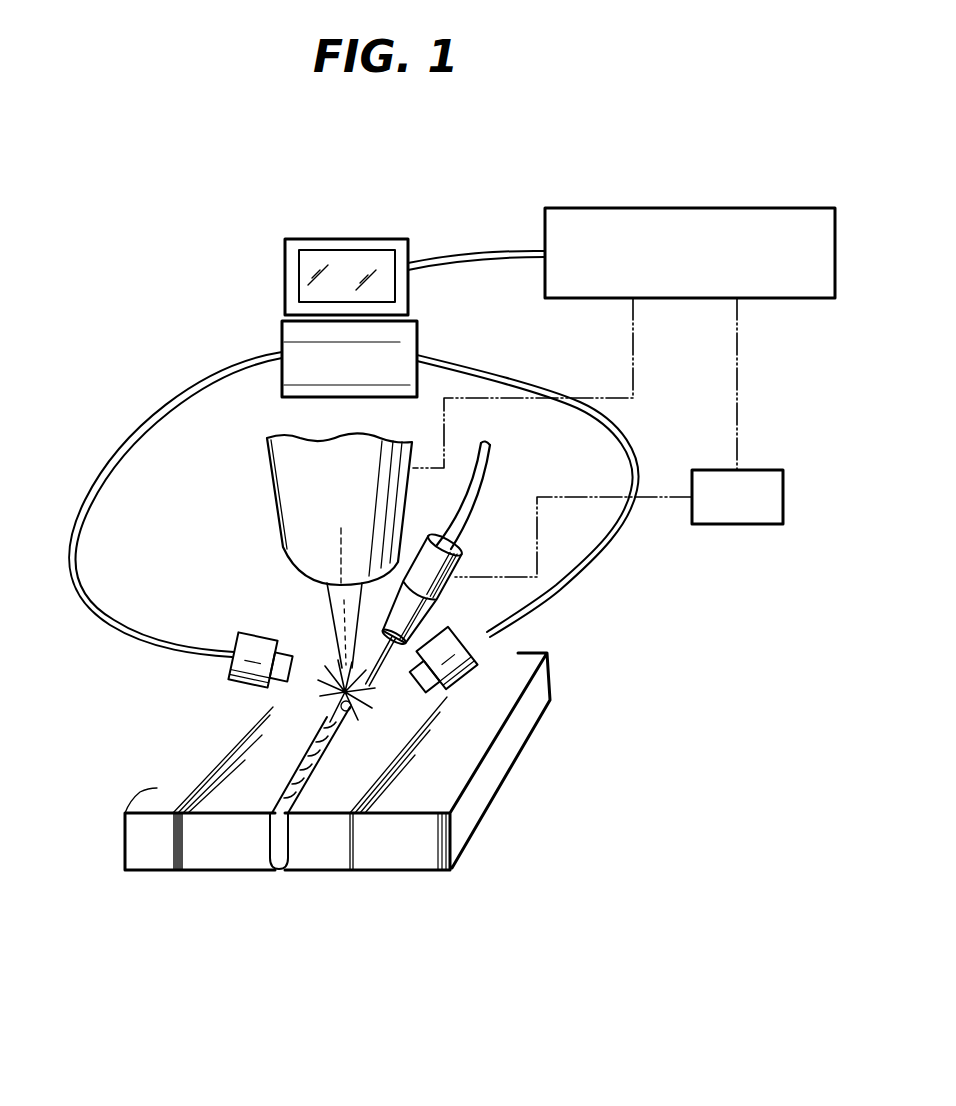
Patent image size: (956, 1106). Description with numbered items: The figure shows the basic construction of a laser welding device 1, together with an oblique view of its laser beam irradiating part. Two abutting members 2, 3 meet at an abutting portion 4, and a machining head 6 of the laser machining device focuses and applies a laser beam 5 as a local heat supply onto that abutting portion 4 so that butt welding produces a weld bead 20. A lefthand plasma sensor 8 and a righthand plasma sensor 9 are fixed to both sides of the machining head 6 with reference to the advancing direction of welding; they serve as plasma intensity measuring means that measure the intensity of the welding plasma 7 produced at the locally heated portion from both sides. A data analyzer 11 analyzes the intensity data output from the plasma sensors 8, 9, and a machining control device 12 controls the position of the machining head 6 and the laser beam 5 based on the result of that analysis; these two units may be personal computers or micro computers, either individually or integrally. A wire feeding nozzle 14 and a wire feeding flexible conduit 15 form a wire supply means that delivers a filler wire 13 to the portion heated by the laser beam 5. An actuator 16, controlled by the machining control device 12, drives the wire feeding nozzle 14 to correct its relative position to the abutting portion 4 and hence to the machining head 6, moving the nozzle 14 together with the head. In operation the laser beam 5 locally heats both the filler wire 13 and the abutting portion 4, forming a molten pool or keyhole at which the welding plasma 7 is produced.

The welding device 1 is at (160, 385).
The abutting member 2 is at (156, 855).
The abutting member 3 is at (538, 690).
The abutting portion 4 is at (278, 840).
The laser beam 5 is at (330, 616).
The machining head 6 is at (287, 503).
The welding plasma 7 is at (350, 703).
The lefthand plasma sensor 8 is at (250, 645).
The righthand plasma sensor 9 is at (455, 642).
The data analyzer 11 is at (308, 239).
The machining control device 12 is at (697, 208).
The filler wire 13 is at (373, 663).
The wire feeding nozzle 14 is at (462, 580).
The wire feeding flexible conduit 15 is at (482, 480).
The actuator 16 is at (740, 524).
The weld bead 20 is at (311, 767).